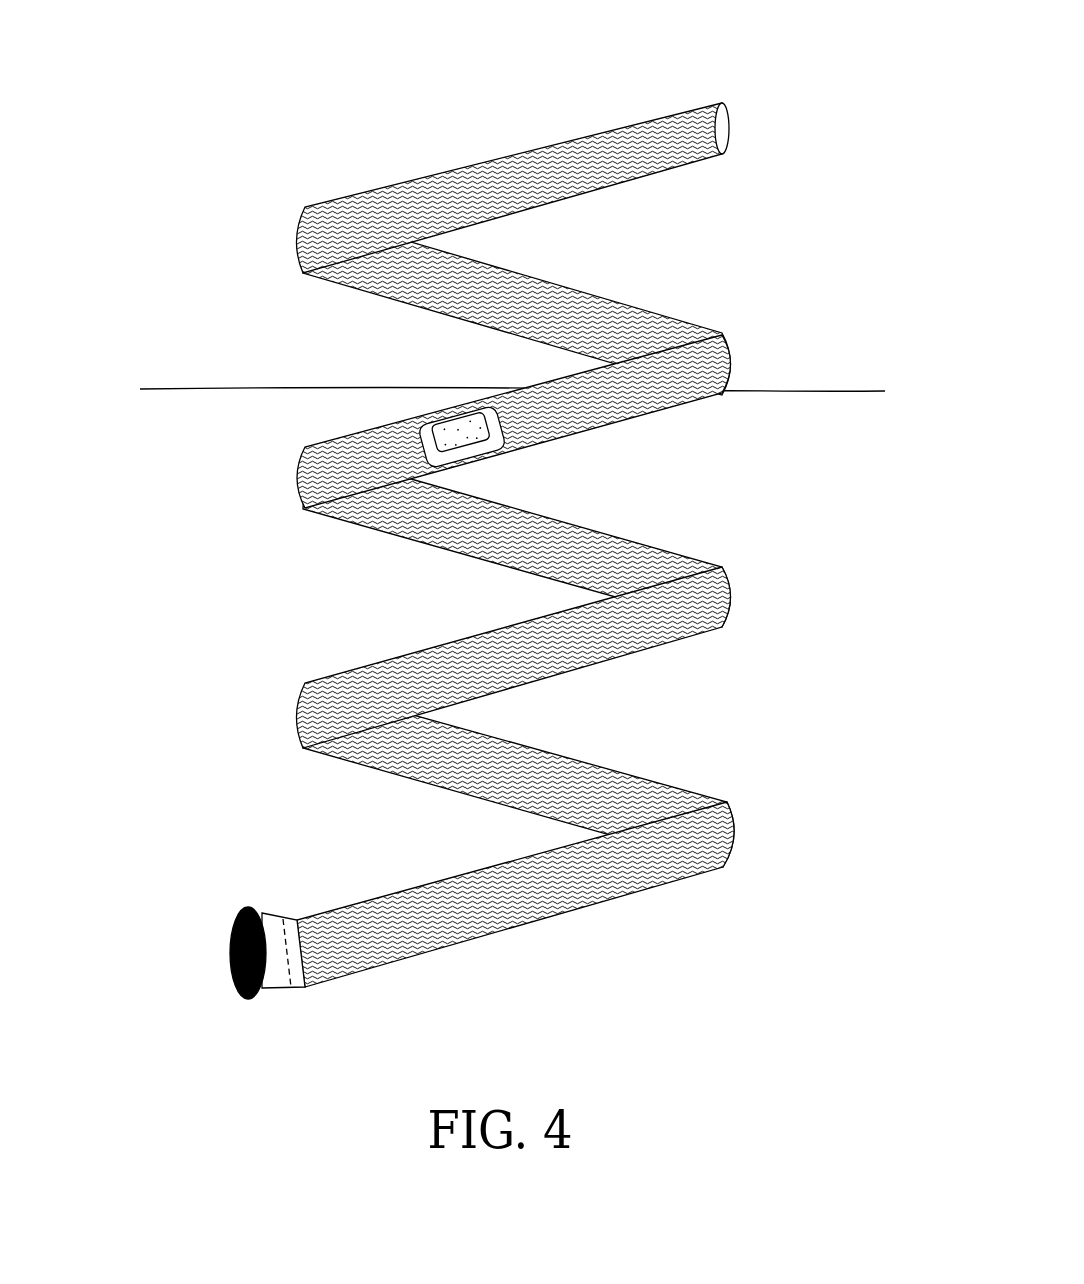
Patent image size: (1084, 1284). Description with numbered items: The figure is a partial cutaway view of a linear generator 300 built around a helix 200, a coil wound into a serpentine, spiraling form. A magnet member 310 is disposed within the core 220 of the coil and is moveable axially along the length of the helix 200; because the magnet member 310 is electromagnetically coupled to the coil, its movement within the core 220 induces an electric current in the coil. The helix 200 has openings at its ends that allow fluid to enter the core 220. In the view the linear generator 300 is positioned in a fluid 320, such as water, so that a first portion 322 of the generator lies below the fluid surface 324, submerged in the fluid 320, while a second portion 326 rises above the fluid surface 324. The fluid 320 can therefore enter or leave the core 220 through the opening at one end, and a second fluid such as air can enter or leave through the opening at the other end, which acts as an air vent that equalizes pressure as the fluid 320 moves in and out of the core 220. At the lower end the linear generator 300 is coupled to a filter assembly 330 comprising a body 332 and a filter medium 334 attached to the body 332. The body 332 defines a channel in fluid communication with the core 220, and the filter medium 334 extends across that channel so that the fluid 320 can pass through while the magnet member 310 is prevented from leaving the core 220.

The helix 200 is at (501, 500).
The core 220 is at (495, 422).
The linear generator 300 is at (501, 546).
The magnet member 310 is at (458, 413).
The fluid 320 is at (848, 563).
The first portion 322 is at (780, 857).
The fluid surface 324 is at (536, 392).
The second portion 326 is at (222, 140).
The filter assembly 330 is at (275, 1004).
The body 332 is at (292, 987).
The filter medium 334 is at (248, 1005).